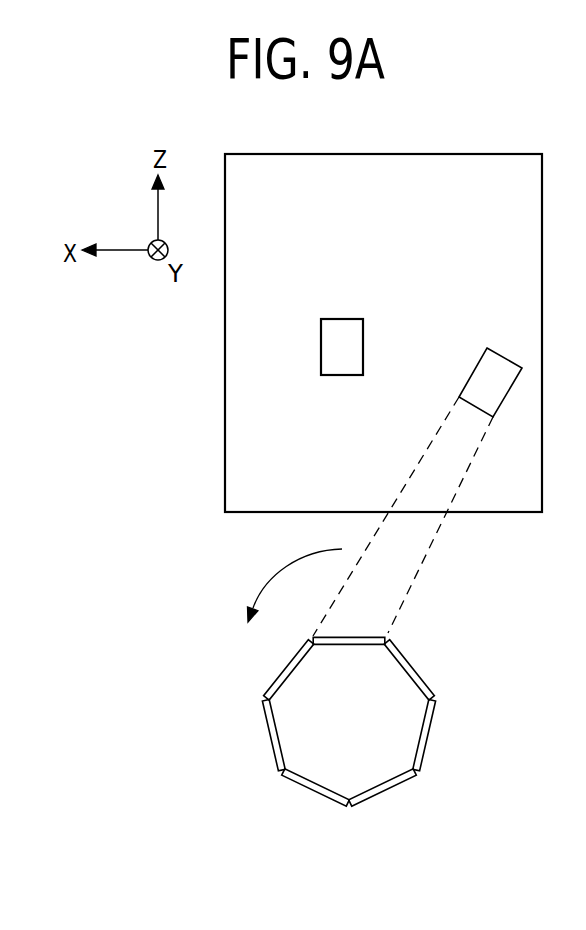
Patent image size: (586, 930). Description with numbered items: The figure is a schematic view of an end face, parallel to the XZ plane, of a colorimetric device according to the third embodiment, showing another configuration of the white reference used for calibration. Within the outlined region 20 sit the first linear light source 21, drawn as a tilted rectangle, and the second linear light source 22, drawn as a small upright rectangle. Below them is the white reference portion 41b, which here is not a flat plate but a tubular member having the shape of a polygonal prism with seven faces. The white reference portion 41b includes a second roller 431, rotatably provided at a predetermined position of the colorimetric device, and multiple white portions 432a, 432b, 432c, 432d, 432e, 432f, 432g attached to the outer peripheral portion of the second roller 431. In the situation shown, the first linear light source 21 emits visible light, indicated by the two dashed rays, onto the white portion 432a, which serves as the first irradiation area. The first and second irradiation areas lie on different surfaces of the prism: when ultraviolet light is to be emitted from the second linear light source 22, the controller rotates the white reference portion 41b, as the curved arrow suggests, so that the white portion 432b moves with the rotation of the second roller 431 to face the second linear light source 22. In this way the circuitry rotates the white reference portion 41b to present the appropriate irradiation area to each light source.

The image / display region 20 is at (458, 153).
The first linear light source 21 is at (505, 358).
The second linear light source 22 is at (338, 319).
The white reference portion 41b is at (216, 808).
The second roller 431 is at (355, 767).
The white portion 432a is at (348, 645).
The white portion 432b is at (415, 663).
The white portion 432c is at (432, 738).
The white portion 432d is at (385, 790).
The white portion 432e is at (310, 793).
The white portion 432f is at (267, 743).
The white portion 432g is at (287, 663).